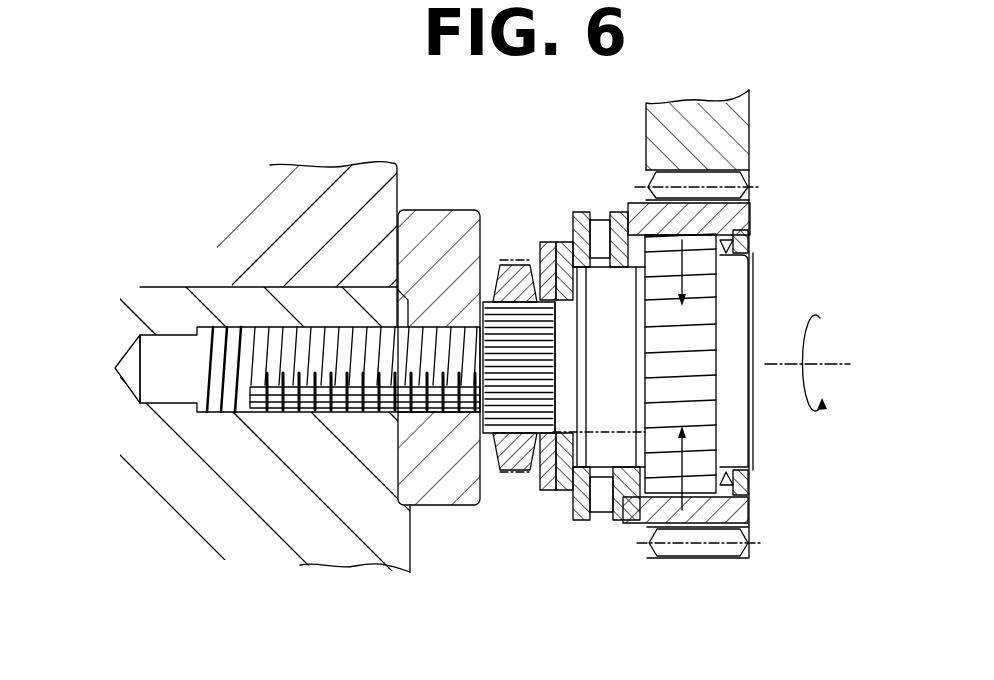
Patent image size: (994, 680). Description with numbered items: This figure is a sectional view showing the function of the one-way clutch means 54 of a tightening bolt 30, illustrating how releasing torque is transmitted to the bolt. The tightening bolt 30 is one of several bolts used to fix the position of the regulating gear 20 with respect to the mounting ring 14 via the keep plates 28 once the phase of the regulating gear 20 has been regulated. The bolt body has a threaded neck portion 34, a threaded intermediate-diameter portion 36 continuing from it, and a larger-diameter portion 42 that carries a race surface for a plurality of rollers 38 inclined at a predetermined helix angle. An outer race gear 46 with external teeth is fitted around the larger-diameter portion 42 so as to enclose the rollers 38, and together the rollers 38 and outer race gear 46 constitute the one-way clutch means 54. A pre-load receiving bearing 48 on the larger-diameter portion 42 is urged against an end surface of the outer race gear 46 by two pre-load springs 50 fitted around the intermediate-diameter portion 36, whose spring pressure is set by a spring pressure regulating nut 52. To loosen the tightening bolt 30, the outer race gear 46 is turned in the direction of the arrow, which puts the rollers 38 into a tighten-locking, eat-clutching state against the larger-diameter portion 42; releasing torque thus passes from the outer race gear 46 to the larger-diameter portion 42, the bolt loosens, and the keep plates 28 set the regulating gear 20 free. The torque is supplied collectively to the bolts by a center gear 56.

The mounting ring 14 is at (387, 525).
The regulating gear 20 is at (373, 187).
The keep plates 28 is at (462, 210).
The tightening bolt 30 is at (548, 535).
The neck portion 34 is at (338, 412).
The intermediate-diameter portion 36 is at (490, 282).
The rollers 38 is at (715, 298).
The larger-diameter portion 42 is at (730, 427).
The outer race gear 46 is at (730, 213).
The pre-load receiving bearing 48 is at (600, 232).
The pre-load springs 50 is at (568, 487).
The spring pressure regulating nut 52 is at (512, 477).
The one-way clutch means 54 is at (632, 537).
The center gear 56 is at (722, 148).